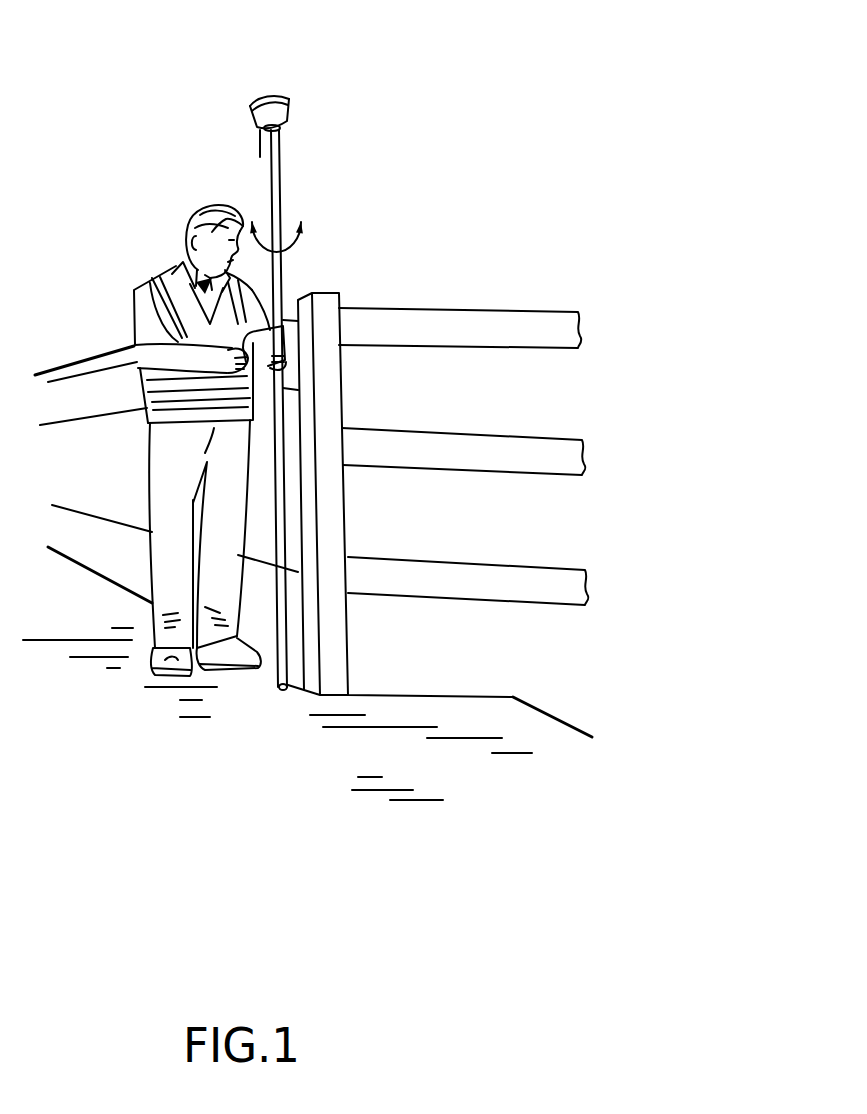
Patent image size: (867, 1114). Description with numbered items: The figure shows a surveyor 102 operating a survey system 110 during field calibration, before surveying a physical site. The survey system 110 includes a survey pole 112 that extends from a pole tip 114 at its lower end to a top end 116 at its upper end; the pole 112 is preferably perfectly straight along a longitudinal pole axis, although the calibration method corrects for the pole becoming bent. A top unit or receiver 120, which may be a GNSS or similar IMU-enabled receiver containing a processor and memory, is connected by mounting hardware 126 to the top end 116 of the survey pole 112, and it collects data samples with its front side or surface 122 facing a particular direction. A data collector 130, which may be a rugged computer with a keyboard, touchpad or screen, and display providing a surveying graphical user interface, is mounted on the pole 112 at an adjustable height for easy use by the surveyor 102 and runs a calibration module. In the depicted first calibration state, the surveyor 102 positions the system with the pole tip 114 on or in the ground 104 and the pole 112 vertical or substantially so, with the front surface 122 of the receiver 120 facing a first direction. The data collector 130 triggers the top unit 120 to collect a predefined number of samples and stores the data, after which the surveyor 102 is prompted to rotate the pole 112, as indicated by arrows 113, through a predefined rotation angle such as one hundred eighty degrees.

The surveyor 102 is at (130, 308).
The ground 104 is at (449, 777).
The survey system 110 is at (348, 404).
The survey pole 112 is at (298, 457).
The arrows 113 is at (308, 230).
The pole tip 114 is at (280, 688).
The top end 116 is at (282, 136).
The top unit or receiver 120 is at (327, 106).
The front side or surface 122 is at (285, 108).
The mounting hardware 126 is at (300, 134).
The data collector 130 is at (298, 308).